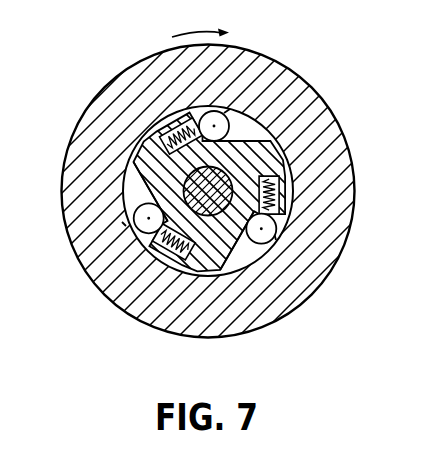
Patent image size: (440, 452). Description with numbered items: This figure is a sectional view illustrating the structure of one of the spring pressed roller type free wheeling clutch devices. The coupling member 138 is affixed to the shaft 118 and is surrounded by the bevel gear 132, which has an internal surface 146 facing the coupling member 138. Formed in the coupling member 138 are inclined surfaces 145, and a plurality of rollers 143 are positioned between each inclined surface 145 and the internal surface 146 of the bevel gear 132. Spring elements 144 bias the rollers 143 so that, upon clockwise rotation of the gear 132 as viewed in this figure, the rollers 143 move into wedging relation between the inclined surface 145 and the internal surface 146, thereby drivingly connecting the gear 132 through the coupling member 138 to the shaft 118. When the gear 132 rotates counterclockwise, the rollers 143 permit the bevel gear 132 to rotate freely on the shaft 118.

The shaft 118 is at (221, 200).
The bevel gear 132 is at (243, 58).
The coupling member 138 is at (270, 162).
The rollers 143 is at (225, 115).
The spring elements 144 is at (170, 125).
The inclined surface 145 is at (248, 138).
The internal surface 146 is at (254, 120).